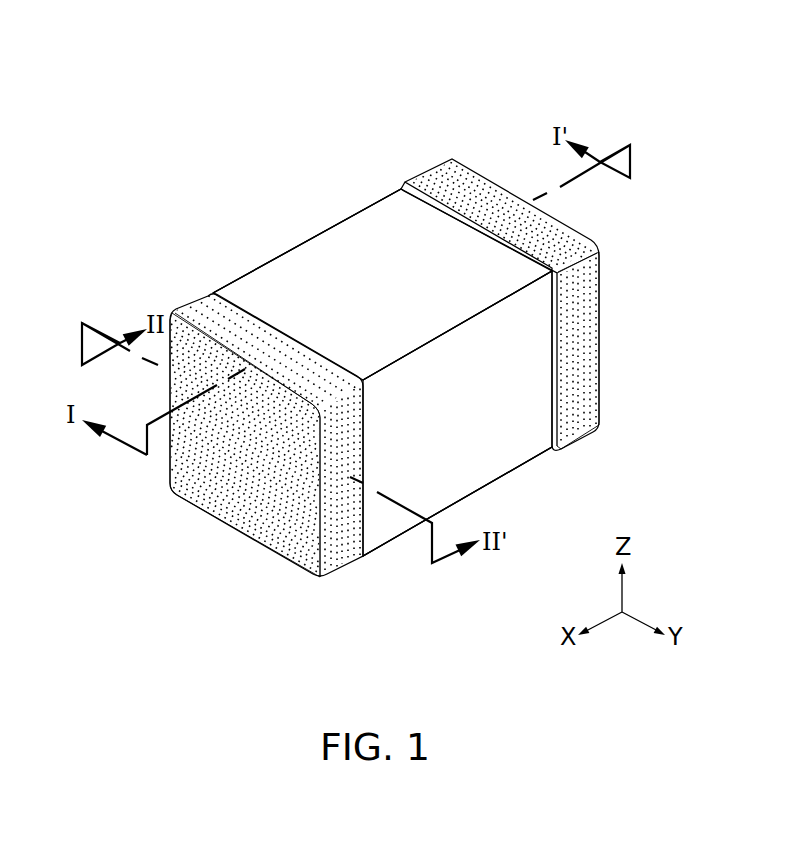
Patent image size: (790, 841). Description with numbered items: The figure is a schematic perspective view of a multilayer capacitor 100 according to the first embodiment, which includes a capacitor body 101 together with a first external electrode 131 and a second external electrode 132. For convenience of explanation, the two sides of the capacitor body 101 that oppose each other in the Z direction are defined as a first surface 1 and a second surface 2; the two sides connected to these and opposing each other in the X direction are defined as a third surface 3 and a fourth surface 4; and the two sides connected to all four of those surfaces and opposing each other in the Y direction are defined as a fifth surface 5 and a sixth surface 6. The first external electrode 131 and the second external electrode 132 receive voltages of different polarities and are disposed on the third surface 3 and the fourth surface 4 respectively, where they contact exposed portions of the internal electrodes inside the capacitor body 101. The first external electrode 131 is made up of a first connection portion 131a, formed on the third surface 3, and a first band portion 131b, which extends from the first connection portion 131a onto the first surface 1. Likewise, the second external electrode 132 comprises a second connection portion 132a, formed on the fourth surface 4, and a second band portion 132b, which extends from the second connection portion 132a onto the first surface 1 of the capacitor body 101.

The multilayer capacitor 100 is at (215, 51).
The capacitor body 101 is at (414, 352).
The first surface 1 is at (497, 450).
The second surface 2 is at (367, 262).
The third surface 3 is at (229, 494).
The fourth surface 4 is at (590, 312).
The fifth surface 5 is at (512, 431).
The sixth surface 6 is at (299, 301).
The first external electrode 131 is at (284, 495).
The first connection portion 131a is at (288, 537).
The first band portion 131b is at (342, 543).
The second external electrode 132 is at (488, 247).
The second connection portion 132a is at (487, 177).
The second band portion 132b is at (433, 170).